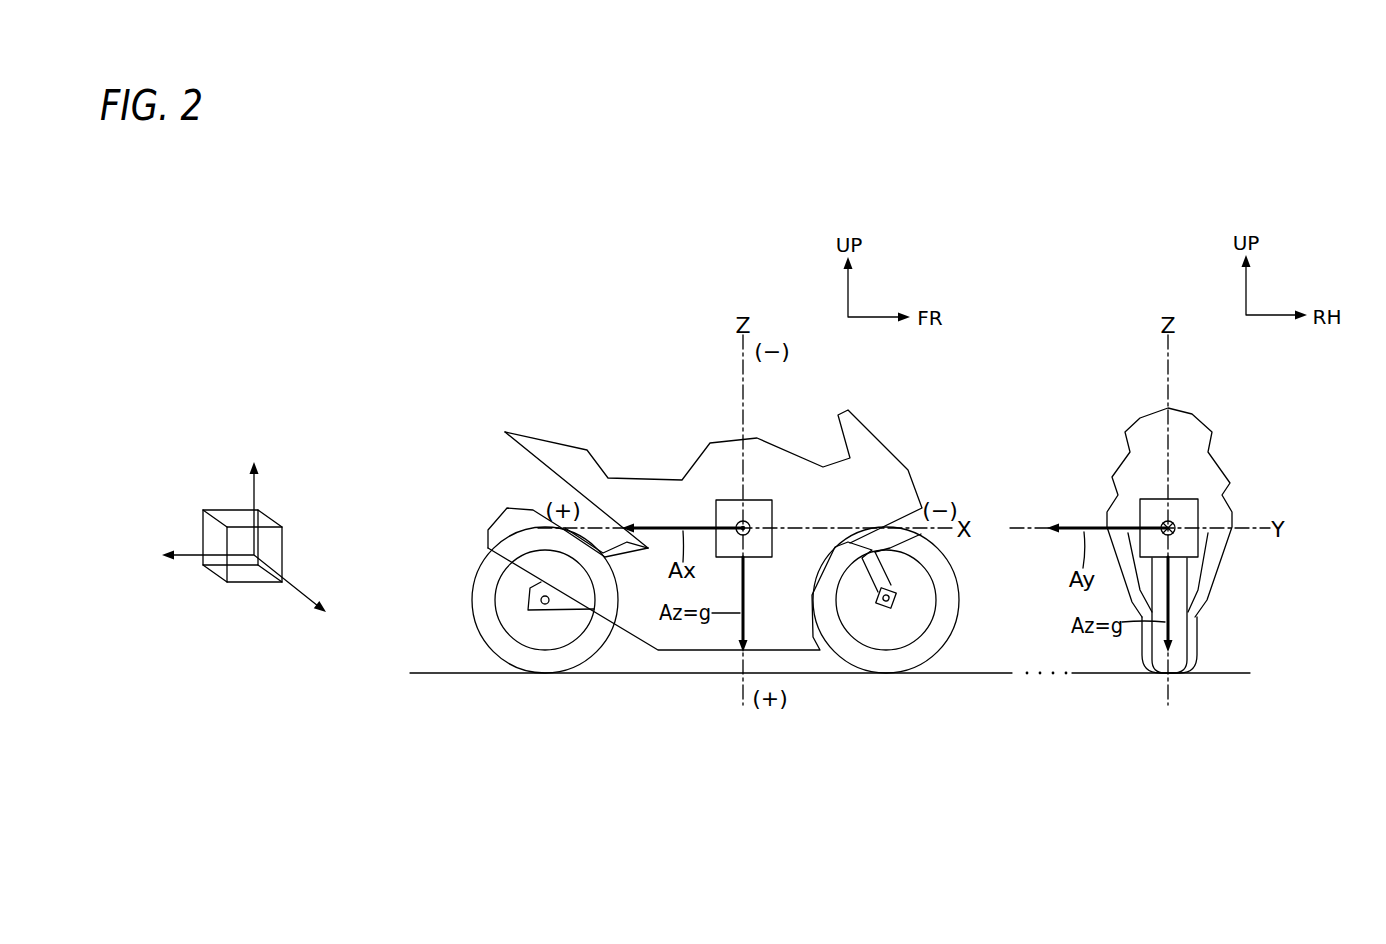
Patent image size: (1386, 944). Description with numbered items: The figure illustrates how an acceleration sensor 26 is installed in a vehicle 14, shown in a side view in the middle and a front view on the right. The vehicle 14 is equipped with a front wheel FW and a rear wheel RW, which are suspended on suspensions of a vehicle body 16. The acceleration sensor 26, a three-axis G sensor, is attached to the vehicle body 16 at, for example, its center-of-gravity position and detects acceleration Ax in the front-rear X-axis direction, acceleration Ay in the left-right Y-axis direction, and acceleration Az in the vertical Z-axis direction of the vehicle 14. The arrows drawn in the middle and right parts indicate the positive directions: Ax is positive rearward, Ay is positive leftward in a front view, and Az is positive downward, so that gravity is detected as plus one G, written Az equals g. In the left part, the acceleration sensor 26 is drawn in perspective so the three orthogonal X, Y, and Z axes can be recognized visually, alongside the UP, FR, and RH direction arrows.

The vehicle 14 is at (871, 416).
The vehicle body 16 is at (705, 440).
The acceleration sensor 26 is at (238, 518).
The rear wheel RW is at (473, 618).
The front wheel FW is at (937, 635).